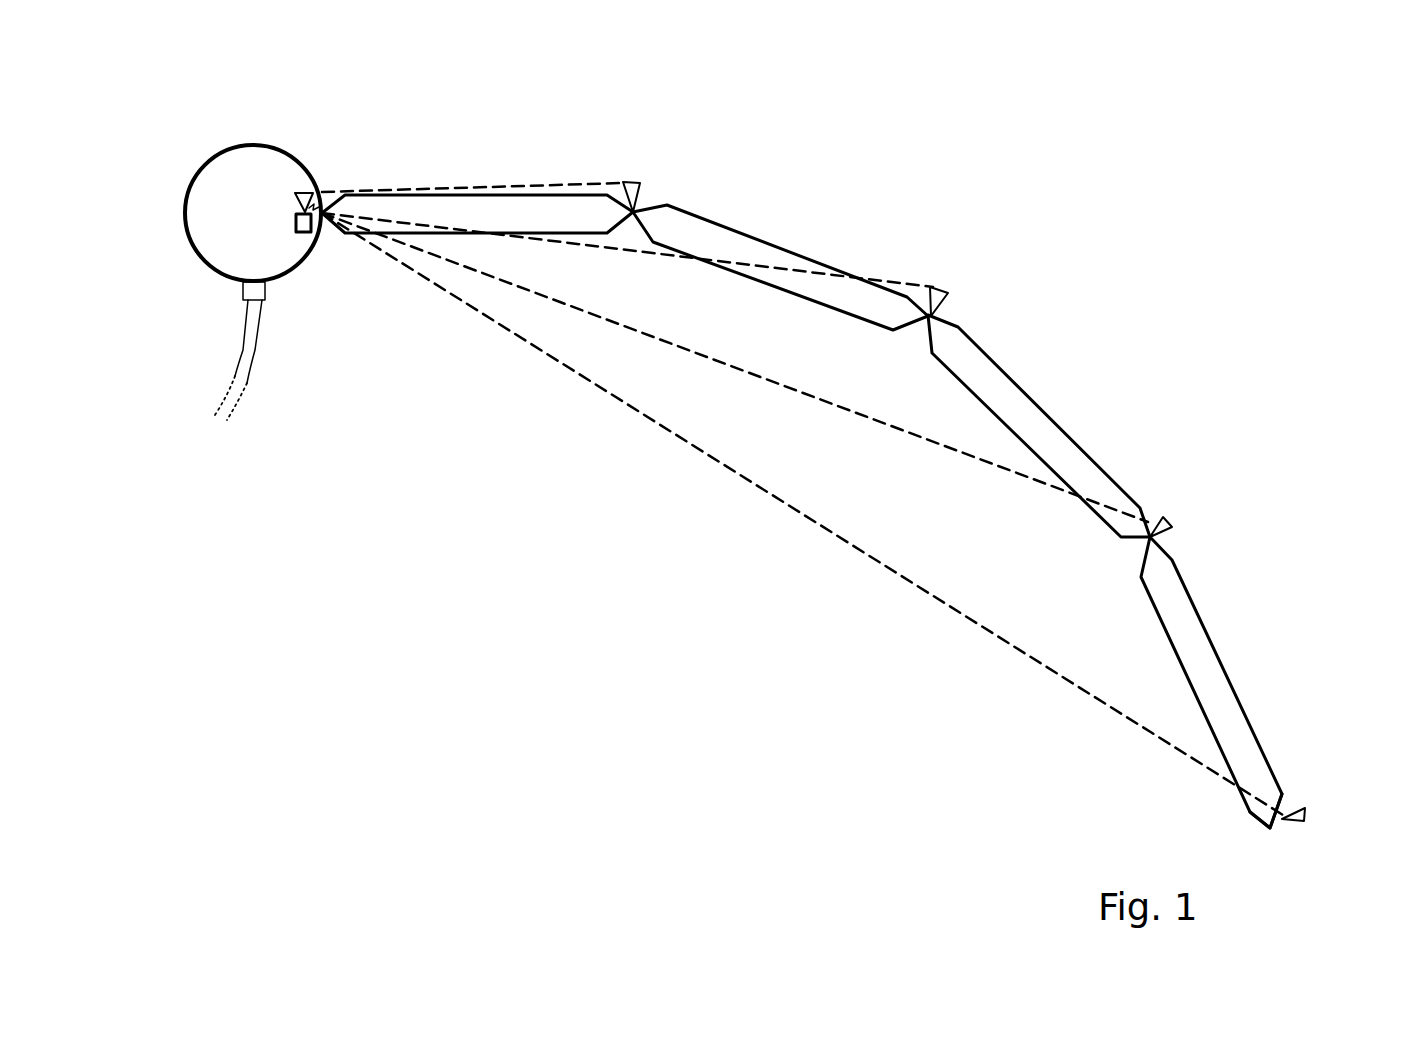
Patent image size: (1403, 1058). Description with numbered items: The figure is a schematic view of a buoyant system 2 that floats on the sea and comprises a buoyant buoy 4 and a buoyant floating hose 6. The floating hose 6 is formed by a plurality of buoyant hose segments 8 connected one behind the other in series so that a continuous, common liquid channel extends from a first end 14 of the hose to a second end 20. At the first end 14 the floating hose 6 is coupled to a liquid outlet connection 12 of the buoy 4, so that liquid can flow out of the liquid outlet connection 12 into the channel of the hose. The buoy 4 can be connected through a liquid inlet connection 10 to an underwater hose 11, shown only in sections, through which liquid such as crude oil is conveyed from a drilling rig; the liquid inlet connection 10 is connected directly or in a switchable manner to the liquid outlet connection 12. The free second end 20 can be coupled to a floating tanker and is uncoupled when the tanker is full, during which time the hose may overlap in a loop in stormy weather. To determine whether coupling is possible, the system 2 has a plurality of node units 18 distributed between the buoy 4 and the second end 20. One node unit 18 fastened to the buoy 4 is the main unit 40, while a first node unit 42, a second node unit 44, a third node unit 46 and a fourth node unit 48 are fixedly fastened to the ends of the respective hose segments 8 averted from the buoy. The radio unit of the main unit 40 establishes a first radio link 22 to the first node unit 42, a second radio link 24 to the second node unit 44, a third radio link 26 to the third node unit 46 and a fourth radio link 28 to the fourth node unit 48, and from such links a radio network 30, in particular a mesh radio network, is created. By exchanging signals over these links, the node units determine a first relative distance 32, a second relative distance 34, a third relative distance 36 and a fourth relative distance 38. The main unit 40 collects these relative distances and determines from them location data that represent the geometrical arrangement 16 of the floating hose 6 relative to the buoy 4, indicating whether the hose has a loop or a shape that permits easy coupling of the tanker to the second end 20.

The system 2 is at (751, 496).
The buoy 4 is at (284, 129).
The floating hose 6 is at (777, 506).
The hose segment 8 is at (561, 226).
The liquid inlet connection 10 is at (217, 291).
The underwater hose 11 is at (206, 364).
The liquid outlet connection 12 is at (325, 253).
The first end 14 is at (346, 251).
The geometrical arrangement 16 is at (777, 506).
The node unit 18 is at (773, 506).
The second end 20 is at (1315, 795).
The first radio link 22 is at (472, 162).
The second radio link 24 is at (627, 258).
The third radio link 26 is at (735, 367).
The fourth radio link 28 is at (802, 514).
The radio network 30 is at (802, 514).
The first relative distance 32 is at (438, 188).
The second relative distance 34 is at (613, 247).
The third relative distance 36 is at (718, 360).
The fourth relative distance 38 is at (791, 506).
The main unit 40 is at (274, 206).
The first node unit 42 is at (654, 163).
The second node unit 44 is at (968, 296).
The third node unit 46 is at (1196, 526).
The fourth node unit 48 is at (1316, 844).